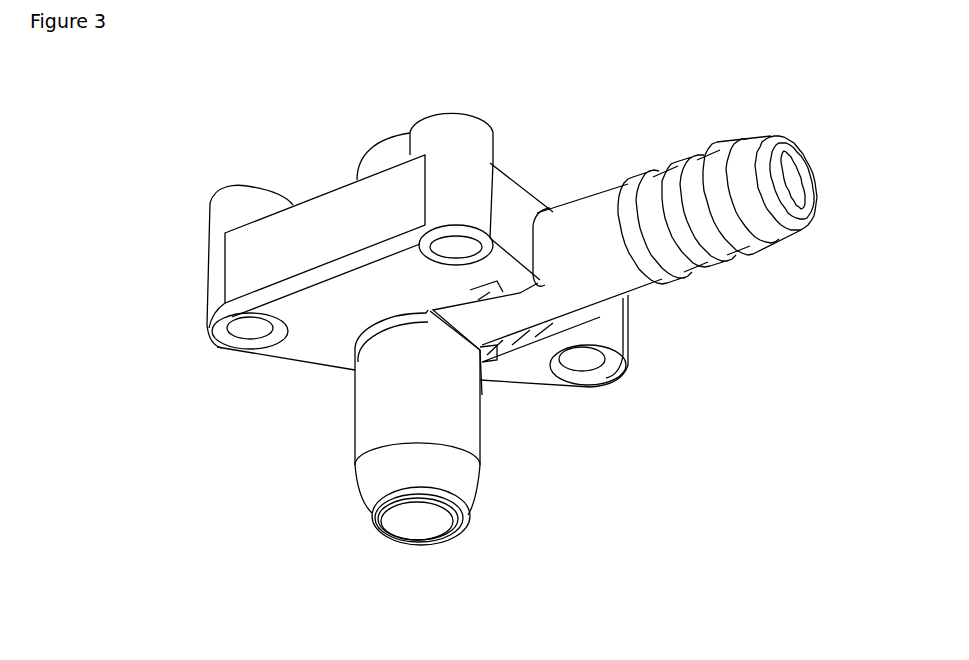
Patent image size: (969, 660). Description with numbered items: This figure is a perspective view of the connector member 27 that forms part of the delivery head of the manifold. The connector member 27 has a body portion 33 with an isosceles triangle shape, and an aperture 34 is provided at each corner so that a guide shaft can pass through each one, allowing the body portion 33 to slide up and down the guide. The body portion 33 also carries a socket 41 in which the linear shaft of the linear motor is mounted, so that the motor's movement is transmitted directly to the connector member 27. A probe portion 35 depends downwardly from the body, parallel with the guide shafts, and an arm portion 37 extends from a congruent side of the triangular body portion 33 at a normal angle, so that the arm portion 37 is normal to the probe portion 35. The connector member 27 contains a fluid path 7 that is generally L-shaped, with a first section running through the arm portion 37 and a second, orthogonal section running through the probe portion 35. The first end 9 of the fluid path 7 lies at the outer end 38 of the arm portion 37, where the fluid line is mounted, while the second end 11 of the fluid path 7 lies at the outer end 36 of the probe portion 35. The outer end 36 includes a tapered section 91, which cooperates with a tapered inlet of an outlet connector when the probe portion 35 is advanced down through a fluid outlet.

The connector member 27 is at (176, 130).
The body portion 33 is at (327, 192).
The socket 41 is at (377, 147).
The aperture 34 is at (212, 344).
The arm portion 37 is at (590, 187).
The outer end 38 is at (783, 130).
The first end 9 is at (808, 172).
The fluid path 7 is at (792, 184).
The probe portion 35 is at (353, 420).
The tapered section 91 is at (373, 508).
The outer end 36 is at (375, 530).
The second end 11 is at (452, 541).